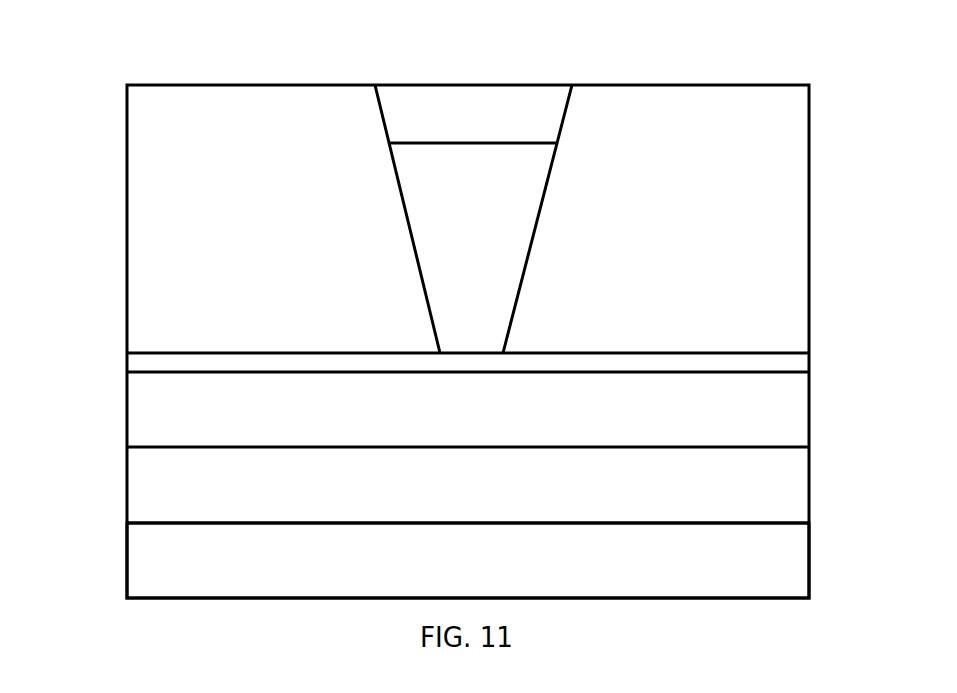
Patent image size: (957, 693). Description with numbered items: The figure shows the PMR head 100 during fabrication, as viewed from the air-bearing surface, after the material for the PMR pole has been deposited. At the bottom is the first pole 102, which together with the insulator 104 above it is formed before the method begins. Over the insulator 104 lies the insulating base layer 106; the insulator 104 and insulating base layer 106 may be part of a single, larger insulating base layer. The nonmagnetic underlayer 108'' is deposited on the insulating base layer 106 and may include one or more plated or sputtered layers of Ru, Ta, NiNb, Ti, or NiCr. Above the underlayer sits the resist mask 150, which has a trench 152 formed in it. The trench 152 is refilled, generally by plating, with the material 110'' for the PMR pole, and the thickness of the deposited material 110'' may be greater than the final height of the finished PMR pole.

The PMR head 100 is at (493, 42).
The resist mask 150 is at (127, 260).
The trench 152 is at (468, 102).
The material for the PMR pole 110'' is at (469, 101).
The insulating base layer 106 is at (809, 392).
The nonmagnetic underlayer 108'' is at (425, 409).
The insulator 104 is at (127, 505).
The first pole 102 is at (809, 579).